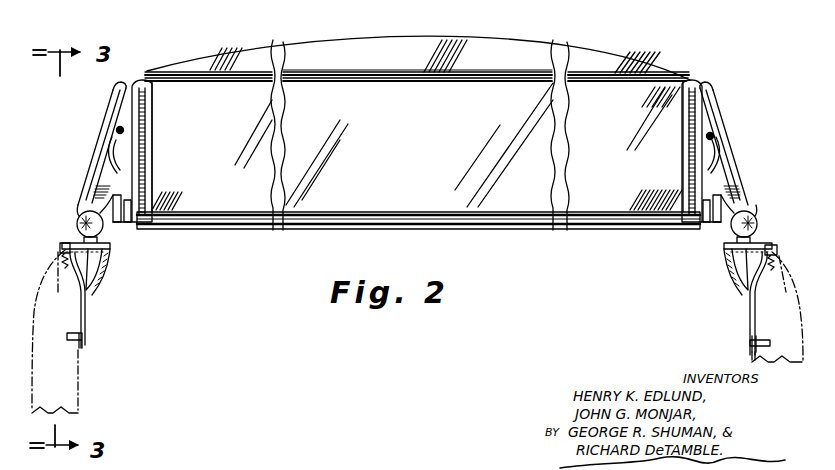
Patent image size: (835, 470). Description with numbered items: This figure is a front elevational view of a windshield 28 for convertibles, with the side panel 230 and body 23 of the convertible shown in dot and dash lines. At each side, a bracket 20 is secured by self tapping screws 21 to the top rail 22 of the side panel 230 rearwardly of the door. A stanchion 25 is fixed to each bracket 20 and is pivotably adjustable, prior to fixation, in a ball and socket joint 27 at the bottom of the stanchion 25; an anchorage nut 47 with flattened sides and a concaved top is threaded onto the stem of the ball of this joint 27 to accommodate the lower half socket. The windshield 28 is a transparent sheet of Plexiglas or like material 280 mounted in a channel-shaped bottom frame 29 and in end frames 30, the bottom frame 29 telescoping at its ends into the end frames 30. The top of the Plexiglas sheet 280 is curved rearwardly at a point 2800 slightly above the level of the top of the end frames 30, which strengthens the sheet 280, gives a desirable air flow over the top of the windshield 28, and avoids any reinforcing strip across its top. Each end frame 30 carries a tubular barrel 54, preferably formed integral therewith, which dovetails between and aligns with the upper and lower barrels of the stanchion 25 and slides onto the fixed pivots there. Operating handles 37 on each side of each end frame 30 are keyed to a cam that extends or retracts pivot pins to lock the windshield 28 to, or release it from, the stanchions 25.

The bracket 20 is at (95, 272).
The self tapping screw 21 is at (66, 243).
The top rail 22 is at (748, 309).
The body 23 is at (84, 372).
The side panel 230 is at (80, 398).
The stanchion 25 is at (98, 153).
The ball and socket joint 27 is at (76, 191).
The windshield 28 is at (638, 57).
The Plexiglas sheet 280 is at (505, 48).
The curve point 2800 is at (368, 72).
The bottom frame 29 is at (386, 218).
The end frame 30 is at (158, 100).
The operating handle 37 is at (104, 155).
The anchorage nut 47 is at (100, 238).
The tubular barrel 54 is at (140, 164).